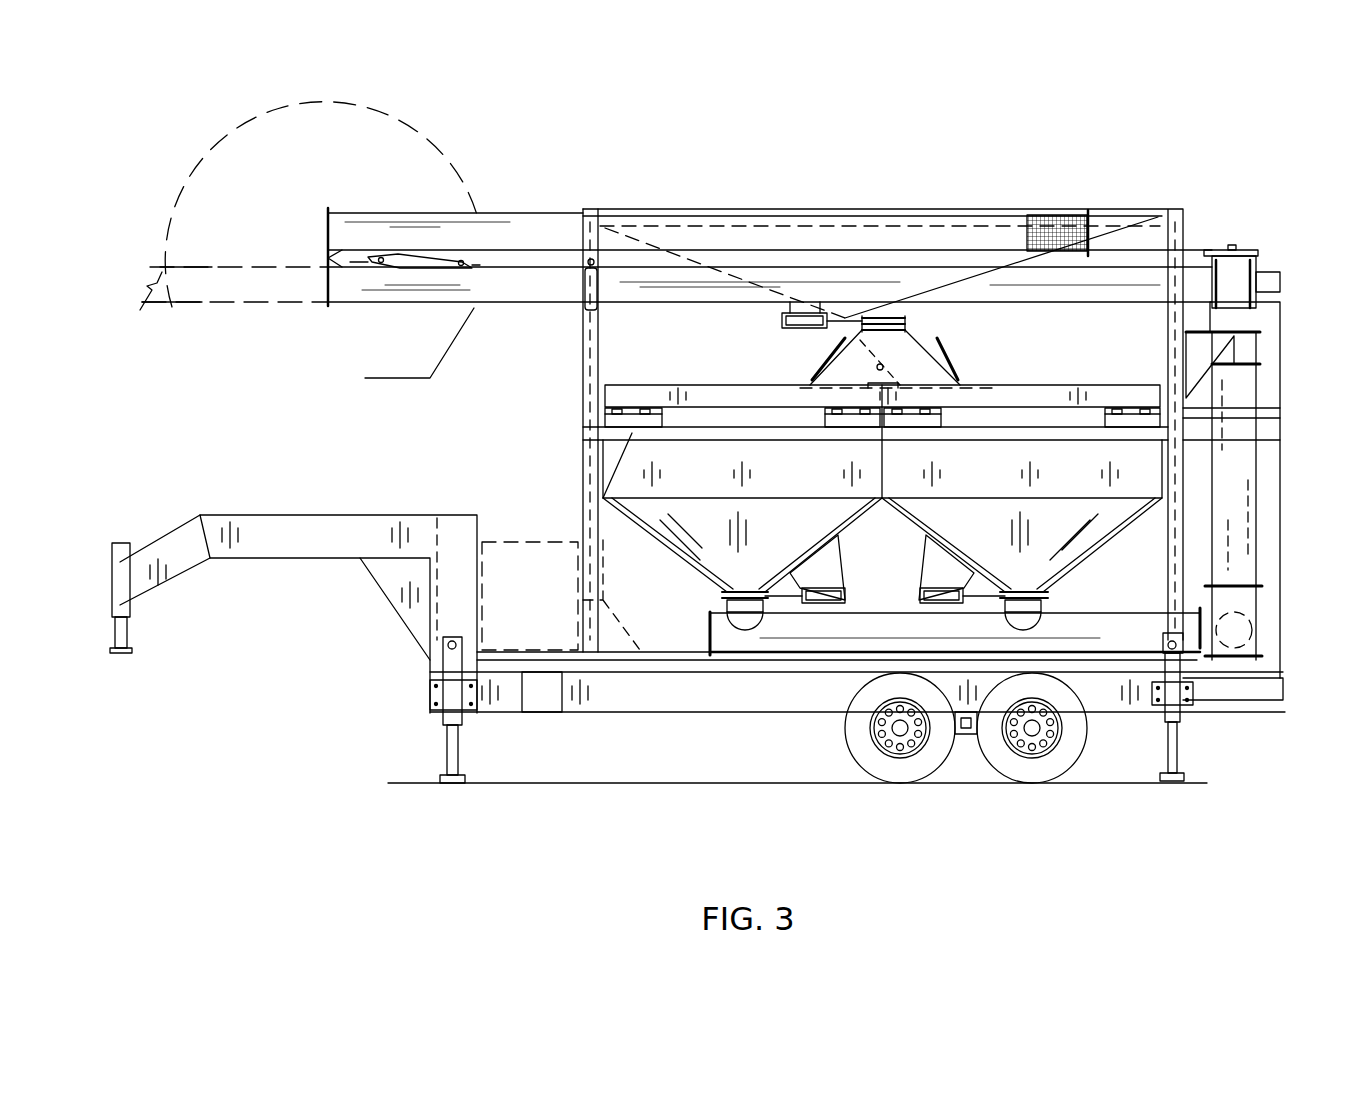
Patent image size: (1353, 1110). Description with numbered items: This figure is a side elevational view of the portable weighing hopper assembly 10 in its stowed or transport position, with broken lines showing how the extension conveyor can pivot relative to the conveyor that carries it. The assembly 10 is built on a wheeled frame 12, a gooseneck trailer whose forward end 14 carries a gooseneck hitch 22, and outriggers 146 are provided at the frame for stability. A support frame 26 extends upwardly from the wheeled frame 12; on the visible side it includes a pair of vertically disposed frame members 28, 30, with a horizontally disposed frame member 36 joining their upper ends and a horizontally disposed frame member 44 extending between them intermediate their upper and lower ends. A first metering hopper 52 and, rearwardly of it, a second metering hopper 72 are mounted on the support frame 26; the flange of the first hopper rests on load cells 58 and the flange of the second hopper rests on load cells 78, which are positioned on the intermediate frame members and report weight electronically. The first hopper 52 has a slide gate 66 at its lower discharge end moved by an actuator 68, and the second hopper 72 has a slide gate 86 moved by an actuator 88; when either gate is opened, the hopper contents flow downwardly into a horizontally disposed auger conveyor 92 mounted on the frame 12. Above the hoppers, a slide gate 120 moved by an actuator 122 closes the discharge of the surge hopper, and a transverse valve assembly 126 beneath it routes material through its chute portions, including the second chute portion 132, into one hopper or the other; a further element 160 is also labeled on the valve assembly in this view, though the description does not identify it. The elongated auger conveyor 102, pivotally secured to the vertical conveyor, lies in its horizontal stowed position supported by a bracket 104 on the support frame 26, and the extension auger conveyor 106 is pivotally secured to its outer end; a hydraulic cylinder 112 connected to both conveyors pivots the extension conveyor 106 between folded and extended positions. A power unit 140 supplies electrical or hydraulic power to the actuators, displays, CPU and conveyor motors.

The portable weighing hopper assembly 10 is at (360, 418).
The wheeled frame 12 is at (639, 720).
The forward end 14 is at (110, 682).
The gooseneck hitch 22 is at (280, 532).
The support frame 26 is at (546, 347).
The vertically disposed frame member 28 is at (582, 399).
The vertically disposed frame member 30 is at (1180, 236).
The horizontally disposed frame member 36 is at (1124, 204).
The horizontally disposed frame member 44 is at (626, 446).
The first metering hopper 52 is at (732, 568).
The load cells 58 is at (630, 420).
The slide gate 66 is at (756, 590).
The actuator 68 is at (824, 610).
The second metering hopper 72 is at (1132, 510).
The load cells 78 is at (1110, 425).
The slide gate 86 is at (1000, 565).
The actuator 88 is at (941, 610).
The auger conveyor 92 is at (1096, 632).
The elongated auger conveyor 102 is at (472, 309).
The bracket 104 is at (598, 276).
The extension auger conveyor 106 is at (532, 210).
The hydraulic cylinder 112 is at (420, 246).
The slide gate 120 is at (870, 316).
The actuator 122 is at (797, 312).
The transverse valve assembly 126 is at (955, 353).
The second chute portion 132 is at (962, 384).
The power unit 140 is at (505, 583).
The outriggers 146 is at (450, 740).
The diverter flap 160 is at (835, 365).